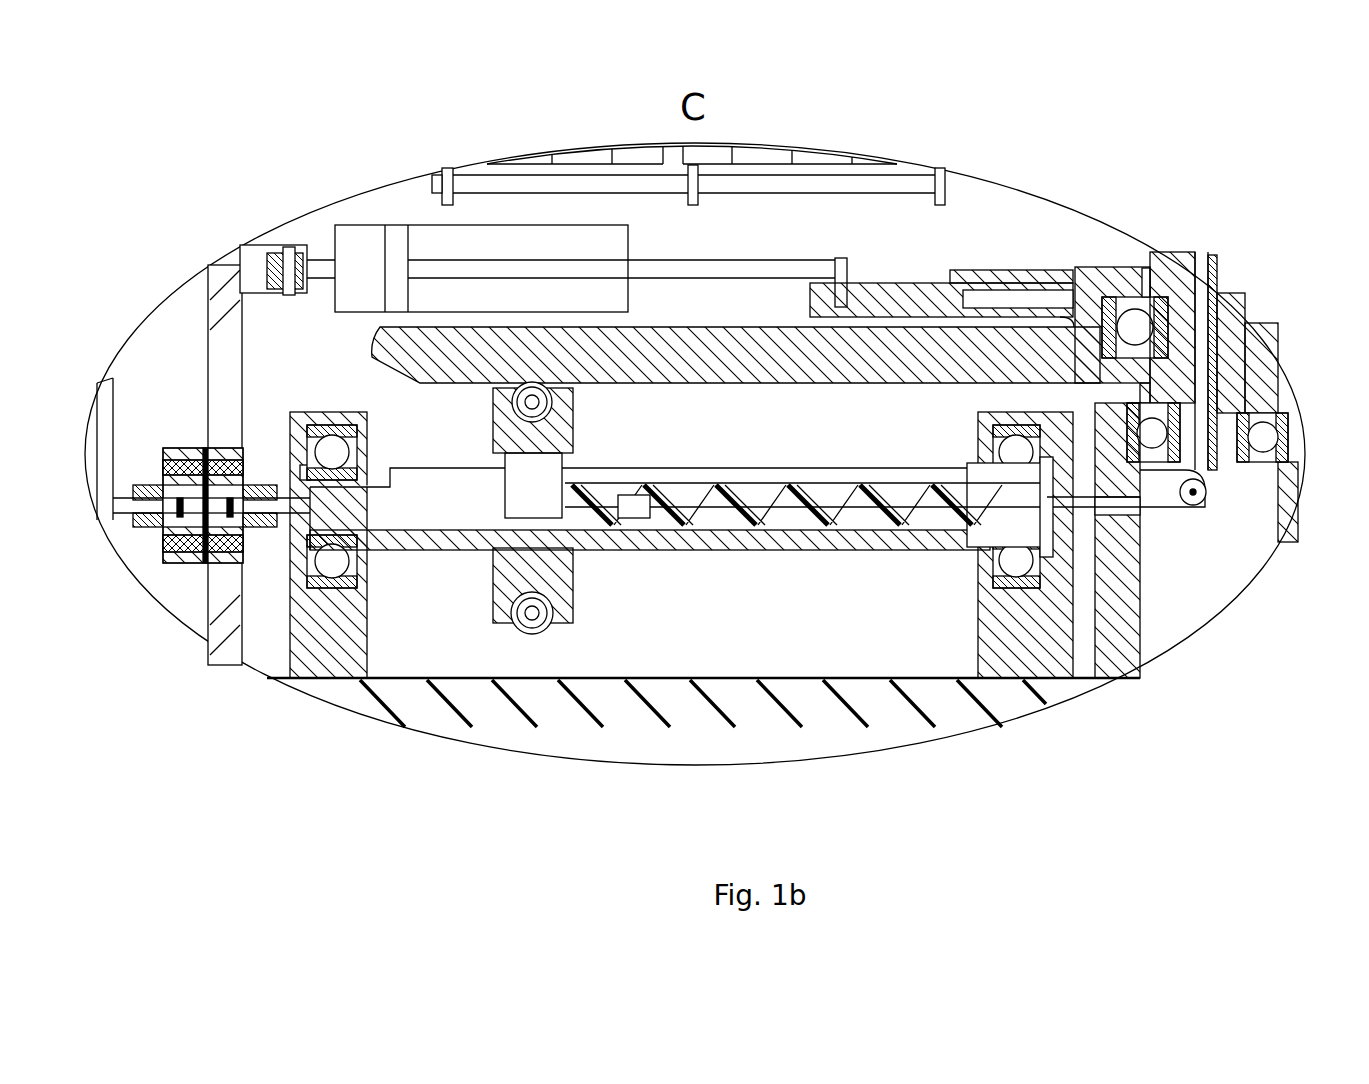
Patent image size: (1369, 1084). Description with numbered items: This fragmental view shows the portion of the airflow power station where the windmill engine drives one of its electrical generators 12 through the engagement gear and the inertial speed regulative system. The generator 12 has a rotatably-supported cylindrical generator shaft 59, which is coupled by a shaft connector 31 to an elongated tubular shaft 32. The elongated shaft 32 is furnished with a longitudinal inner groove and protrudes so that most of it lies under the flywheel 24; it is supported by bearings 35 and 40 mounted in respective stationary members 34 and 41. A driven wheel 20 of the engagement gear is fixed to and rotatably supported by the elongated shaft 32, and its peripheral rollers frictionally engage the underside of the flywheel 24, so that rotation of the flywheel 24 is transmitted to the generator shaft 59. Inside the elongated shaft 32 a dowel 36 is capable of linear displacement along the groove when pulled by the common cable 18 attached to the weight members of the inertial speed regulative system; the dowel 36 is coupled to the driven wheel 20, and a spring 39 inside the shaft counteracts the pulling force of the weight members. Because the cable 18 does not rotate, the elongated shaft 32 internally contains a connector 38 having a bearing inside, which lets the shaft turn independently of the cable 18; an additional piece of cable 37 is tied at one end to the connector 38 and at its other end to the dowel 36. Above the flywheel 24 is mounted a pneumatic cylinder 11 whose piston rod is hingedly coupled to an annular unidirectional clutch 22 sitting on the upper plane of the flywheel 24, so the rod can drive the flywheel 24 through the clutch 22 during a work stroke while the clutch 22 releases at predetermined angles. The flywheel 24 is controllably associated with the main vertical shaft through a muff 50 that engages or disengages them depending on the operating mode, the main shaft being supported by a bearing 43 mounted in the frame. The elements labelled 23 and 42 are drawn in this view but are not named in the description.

The electrical generator 12 is at (105, 373).
The shaft connector 31 is at (183, 455).
The elongated tubular shaft 32 is at (418, 508).
The pneumatic cylinder 11 is at (370, 272).
The driven wheel 20 is at (490, 400).
The flywheel 24 is at (548, 358).
The guide bar 23 is at (930, 298).
The unidirectional clutch 22 is at (1077, 268).
The muff 50 is at (1108, 247).
The generator shaft 59 is at (130, 515).
The stationary member 34 is at (293, 577).
The bearing 35 is at (333, 563).
The dowel 36 is at (525, 500).
The piece of cable 37 is at (580, 508).
The connector 38 is at (637, 507).
The spring 39 is at (680, 503).
The common cable 18 is at (727, 507).
The bearing 40 is at (1014, 563).
The stationary member 41 is at (1018, 640).
The support block 42 is at (1115, 548).
The bearing 43 is at (1263, 437).